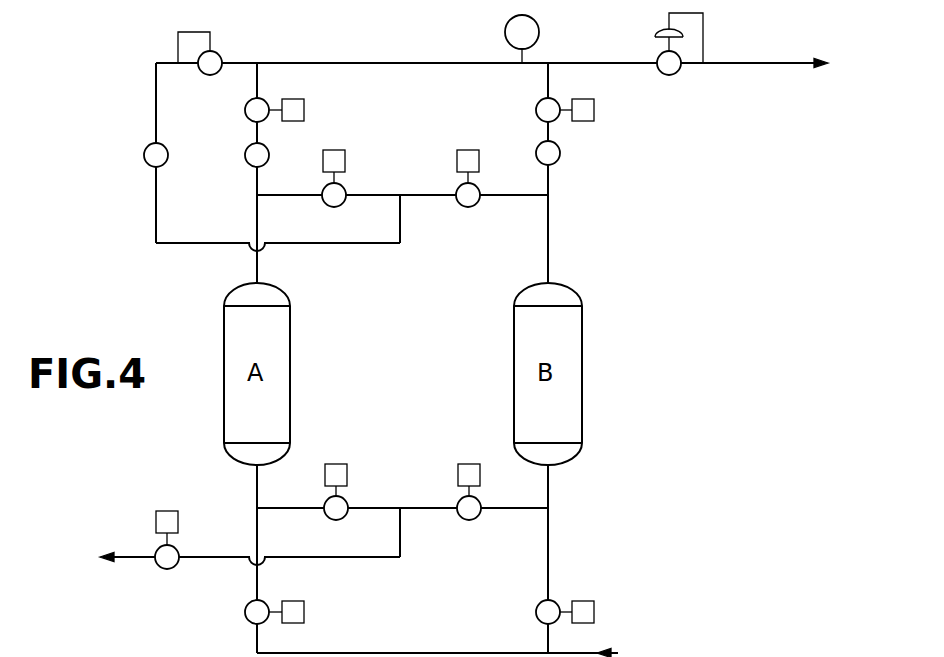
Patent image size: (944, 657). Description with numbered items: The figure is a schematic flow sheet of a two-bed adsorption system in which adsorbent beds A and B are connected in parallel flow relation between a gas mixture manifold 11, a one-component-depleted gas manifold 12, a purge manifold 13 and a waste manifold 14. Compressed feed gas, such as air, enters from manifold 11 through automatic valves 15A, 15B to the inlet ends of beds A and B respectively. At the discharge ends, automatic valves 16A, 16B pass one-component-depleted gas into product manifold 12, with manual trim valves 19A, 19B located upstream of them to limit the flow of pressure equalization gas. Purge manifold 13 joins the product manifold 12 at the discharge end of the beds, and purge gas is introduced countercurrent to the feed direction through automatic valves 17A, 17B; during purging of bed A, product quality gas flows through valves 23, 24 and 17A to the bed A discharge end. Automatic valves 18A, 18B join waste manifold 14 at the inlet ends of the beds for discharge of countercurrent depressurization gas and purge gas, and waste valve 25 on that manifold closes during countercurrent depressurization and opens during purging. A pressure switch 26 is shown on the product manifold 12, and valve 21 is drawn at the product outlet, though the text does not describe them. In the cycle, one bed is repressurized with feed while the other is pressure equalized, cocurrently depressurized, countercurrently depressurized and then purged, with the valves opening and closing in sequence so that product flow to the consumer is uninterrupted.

The gas mixture manifold 11 is at (400, 652).
The one-component-depleted gas manifold 12 is at (423, 62).
The purge manifold 13 is at (340, 245).
The waste manifold 14 is at (341, 558).
The automatic valve 15A is at (248, 620).
The automatic valve 15B is at (536, 616).
The automatic valve 16A is at (245, 110).
The automatic valve 16B is at (536, 111).
The automatic valve 17A is at (330, 207).
The automatic valve 17B is at (463, 207).
The automatic valve 18A is at (339, 521).
The automatic valve 18B is at (473, 521).
The manual trim valve 19A is at (245, 155).
The manual trim valve 19B is at (536, 152).
The back pressure control valve 21 is at (669, 75).
The valve 23 is at (220, 57).
The valve 24 is at (144, 155).
The waste valve 25 is at (165, 570).
The pressure switch 26 is at (540, 32).